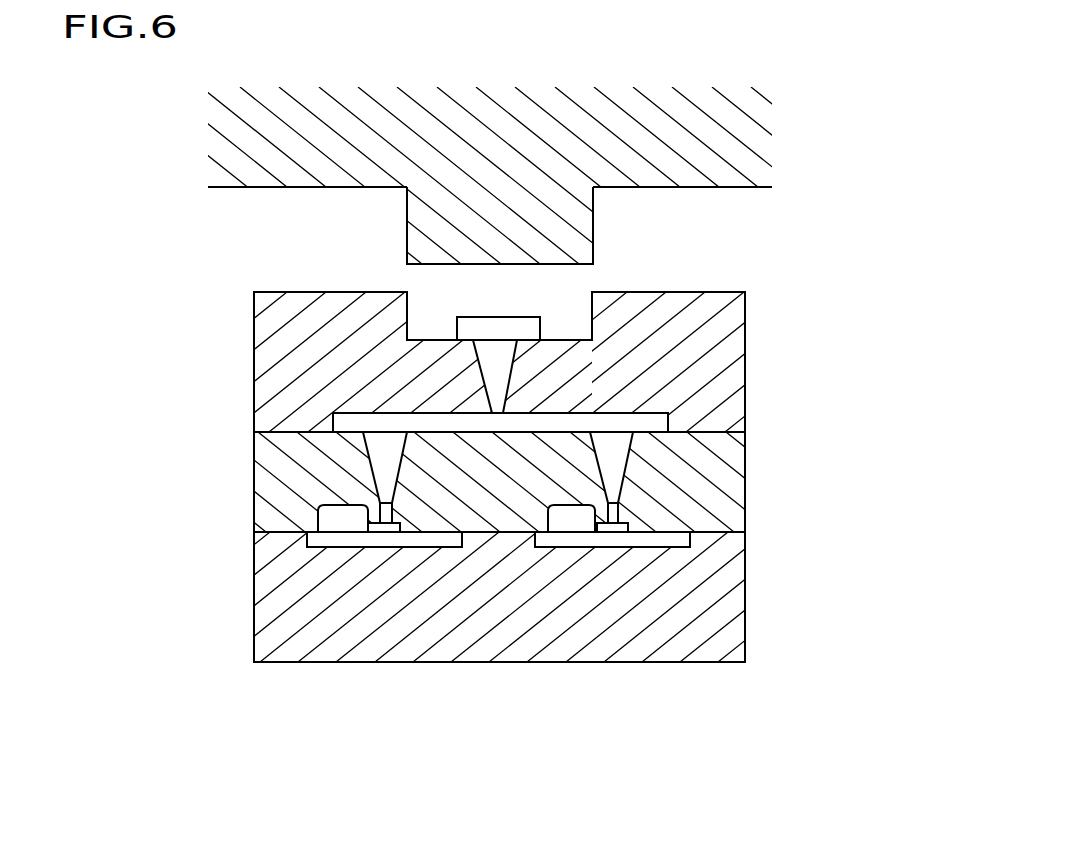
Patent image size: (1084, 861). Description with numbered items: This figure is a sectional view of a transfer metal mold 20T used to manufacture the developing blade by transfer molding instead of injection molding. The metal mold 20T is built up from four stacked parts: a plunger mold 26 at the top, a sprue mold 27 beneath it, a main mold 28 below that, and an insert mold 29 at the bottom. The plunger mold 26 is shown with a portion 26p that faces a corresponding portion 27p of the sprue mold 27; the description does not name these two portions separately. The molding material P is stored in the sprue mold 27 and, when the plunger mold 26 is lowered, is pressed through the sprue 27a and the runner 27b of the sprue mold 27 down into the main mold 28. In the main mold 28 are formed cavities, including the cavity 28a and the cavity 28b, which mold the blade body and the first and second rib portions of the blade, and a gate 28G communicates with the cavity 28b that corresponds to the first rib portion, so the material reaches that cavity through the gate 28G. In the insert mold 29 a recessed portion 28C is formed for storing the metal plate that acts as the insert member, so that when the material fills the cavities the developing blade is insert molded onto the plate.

The plunger mold 26 is at (735, 138).
The protrusion of upper die 26p is at (437, 227).
The sprue mold 27 is at (690, 298).
The recess of insulating layer 27p is at (447, 302).
The molding material P is at (546, 318).
The sprue 27a is at (495, 385).
The runner 27b is at (372, 412).
The main mold 28 is at (712, 484).
The recessed portion 28C is at (393, 540).
The gate 28G is at (385, 505).
The cavity 28a is at (338, 525).
The cavity 28b is at (375, 528).
The insert mold 29 is at (712, 586).
The transfer metal mold 20T is at (784, 358).